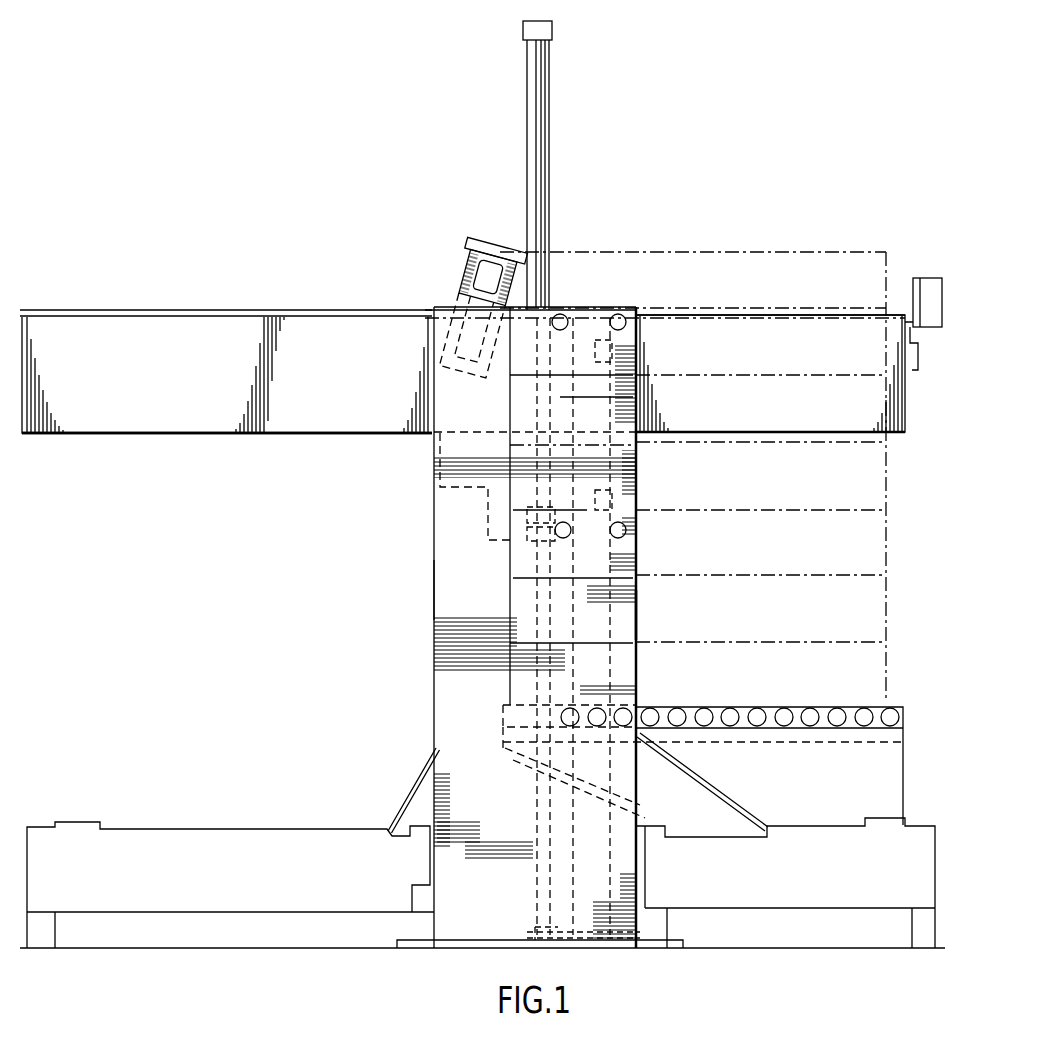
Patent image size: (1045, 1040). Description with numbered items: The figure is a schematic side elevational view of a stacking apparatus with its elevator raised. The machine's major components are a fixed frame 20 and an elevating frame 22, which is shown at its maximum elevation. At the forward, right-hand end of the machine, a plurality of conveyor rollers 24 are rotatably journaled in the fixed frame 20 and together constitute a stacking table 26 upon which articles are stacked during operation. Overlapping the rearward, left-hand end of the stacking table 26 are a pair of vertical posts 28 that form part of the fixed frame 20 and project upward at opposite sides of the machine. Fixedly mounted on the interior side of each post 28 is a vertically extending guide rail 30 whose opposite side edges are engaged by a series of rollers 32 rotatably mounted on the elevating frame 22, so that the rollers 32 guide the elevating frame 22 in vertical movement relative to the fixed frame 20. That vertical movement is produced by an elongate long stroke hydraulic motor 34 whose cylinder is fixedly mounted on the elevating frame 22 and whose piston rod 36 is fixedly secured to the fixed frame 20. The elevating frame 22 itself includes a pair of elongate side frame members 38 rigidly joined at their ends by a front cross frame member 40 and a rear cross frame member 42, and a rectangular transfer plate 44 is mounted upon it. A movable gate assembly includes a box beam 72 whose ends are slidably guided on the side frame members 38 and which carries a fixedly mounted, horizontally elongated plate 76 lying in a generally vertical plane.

The fixed frame 20 is at (460, 710).
The elevating frame 22 is at (320, 330).
The conveyor rollers 24 is at (784, 708).
The stacking table 26 is at (709, 703).
The vertical posts 28 is at (434, 583).
The guide rail 30 is at (642, 612).
The rollers 32 is at (630, 306).
The long stroke hydraulic motor 34 is at (545, 130).
The piston rod 36 is at (540, 800).
The side frame members 38 is at (191, 434).
The front cross frame member 40 is at (905, 396).
The rear cross frame member 42 is at (25, 357).
The transfer plate 44 is at (186, 312).
The box beam 72 is at (470, 278).
The plate 76 is at (498, 248).